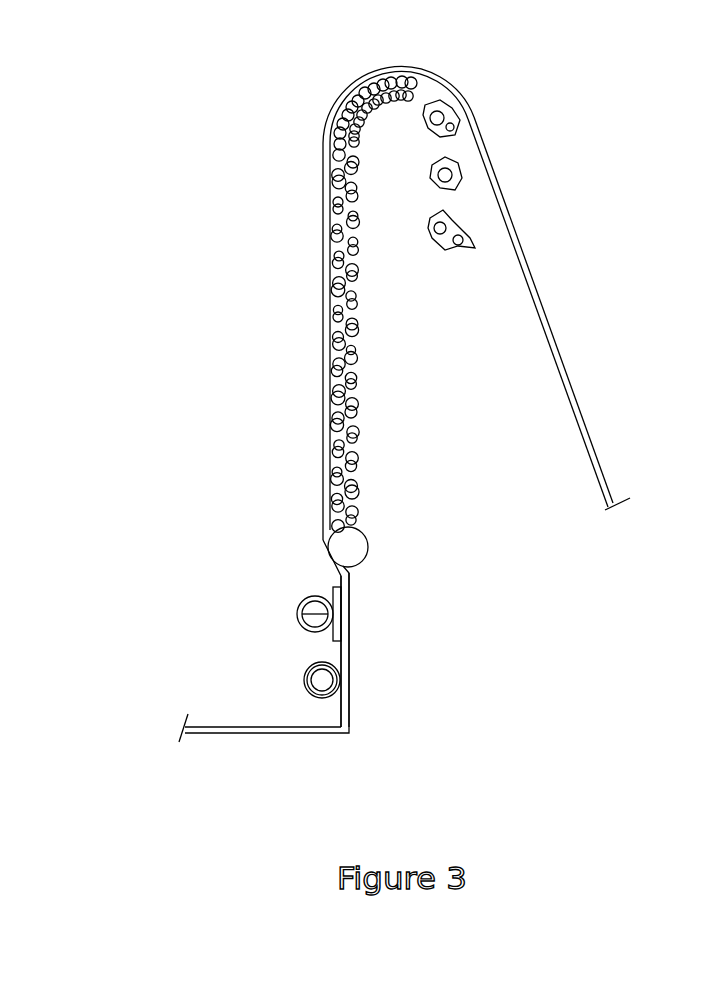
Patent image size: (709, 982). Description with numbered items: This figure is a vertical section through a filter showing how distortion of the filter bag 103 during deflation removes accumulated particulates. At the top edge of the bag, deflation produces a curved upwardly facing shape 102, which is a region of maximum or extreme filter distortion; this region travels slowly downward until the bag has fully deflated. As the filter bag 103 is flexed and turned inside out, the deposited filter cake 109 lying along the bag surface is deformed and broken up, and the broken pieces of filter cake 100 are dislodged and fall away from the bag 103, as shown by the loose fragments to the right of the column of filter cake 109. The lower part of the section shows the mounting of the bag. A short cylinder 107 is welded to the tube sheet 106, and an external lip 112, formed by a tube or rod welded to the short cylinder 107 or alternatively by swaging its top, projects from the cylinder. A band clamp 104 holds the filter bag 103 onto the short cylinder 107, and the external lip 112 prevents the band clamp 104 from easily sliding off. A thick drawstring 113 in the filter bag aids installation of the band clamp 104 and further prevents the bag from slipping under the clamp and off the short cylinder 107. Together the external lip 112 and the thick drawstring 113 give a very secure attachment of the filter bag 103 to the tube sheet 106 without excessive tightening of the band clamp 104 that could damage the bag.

The curved upwardly facing shape 102 is at (427, 65).
The filter bag 103 is at (565, 350).
The filter cake 109 is at (362, 403).
The broken pieces of filter cake 100 is at (448, 254).
The external lip 112 is at (368, 561).
The band clamp 104 is at (292, 602).
The thick drawstring 113 is at (302, 672).
The short cylinder 107 is at (351, 657).
The tube sheet 106 is at (265, 733).